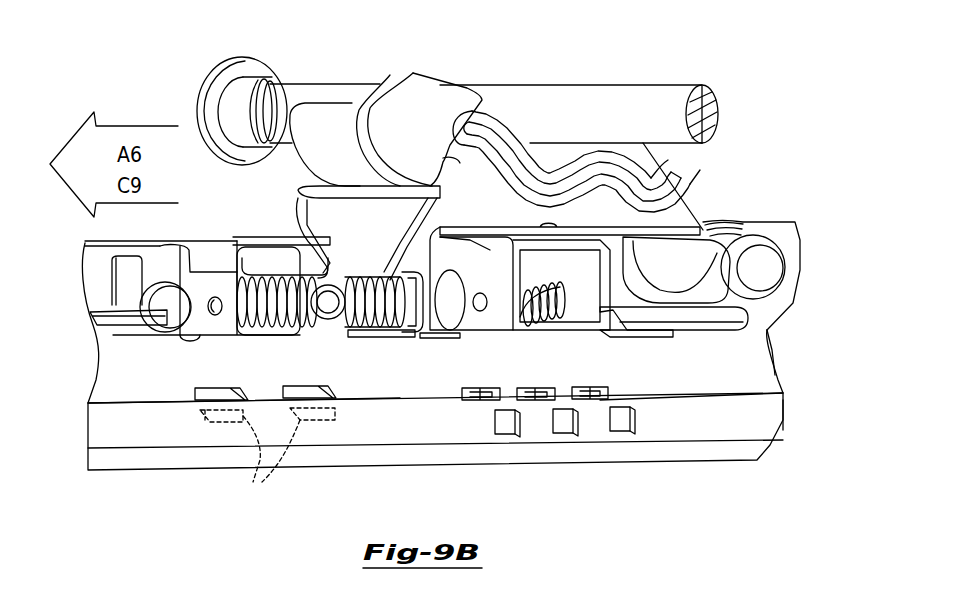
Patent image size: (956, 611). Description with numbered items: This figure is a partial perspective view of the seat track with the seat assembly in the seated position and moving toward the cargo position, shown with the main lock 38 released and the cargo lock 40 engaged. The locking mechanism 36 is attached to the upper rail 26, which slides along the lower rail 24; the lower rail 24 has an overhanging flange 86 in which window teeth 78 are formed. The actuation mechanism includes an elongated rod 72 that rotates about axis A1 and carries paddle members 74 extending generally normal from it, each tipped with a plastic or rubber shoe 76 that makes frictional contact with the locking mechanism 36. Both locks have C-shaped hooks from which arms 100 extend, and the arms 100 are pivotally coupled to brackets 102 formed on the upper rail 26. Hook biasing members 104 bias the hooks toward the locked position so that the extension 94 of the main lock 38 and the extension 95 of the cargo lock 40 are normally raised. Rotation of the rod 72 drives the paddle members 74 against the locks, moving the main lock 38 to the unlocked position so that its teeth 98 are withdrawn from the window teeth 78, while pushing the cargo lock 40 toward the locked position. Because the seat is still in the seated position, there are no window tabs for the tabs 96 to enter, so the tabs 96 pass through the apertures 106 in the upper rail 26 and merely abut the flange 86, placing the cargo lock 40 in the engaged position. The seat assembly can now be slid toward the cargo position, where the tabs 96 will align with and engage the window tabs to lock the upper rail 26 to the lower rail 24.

The lower rails 24 is at (775, 453).
The upper rails 26 is at (770, 376).
The locking mechanism 36 is at (145, 97).
The main lock 38 is at (671, 365).
The cargo lock 40 is at (380, 386).
The elongated rod 72 is at (637, 88).
The paddle members 74 is at (380, 90).
The shoe 76 is at (322, 120).
The window teeth 78 is at (515, 440).
The flange 86 is at (772, 419).
The extension 94 is at (744, 318).
The extension 95 is at (296, 200).
The tabs 96 is at (258, 480).
The teeth 98 is at (541, 388).
The arms 100 is at (400, 268).
The brackets 102 is at (225, 262).
The hook biasing members 104 is at (293, 322).
The apertures 106 is at (318, 370).
The axis A1 is at (712, 118).